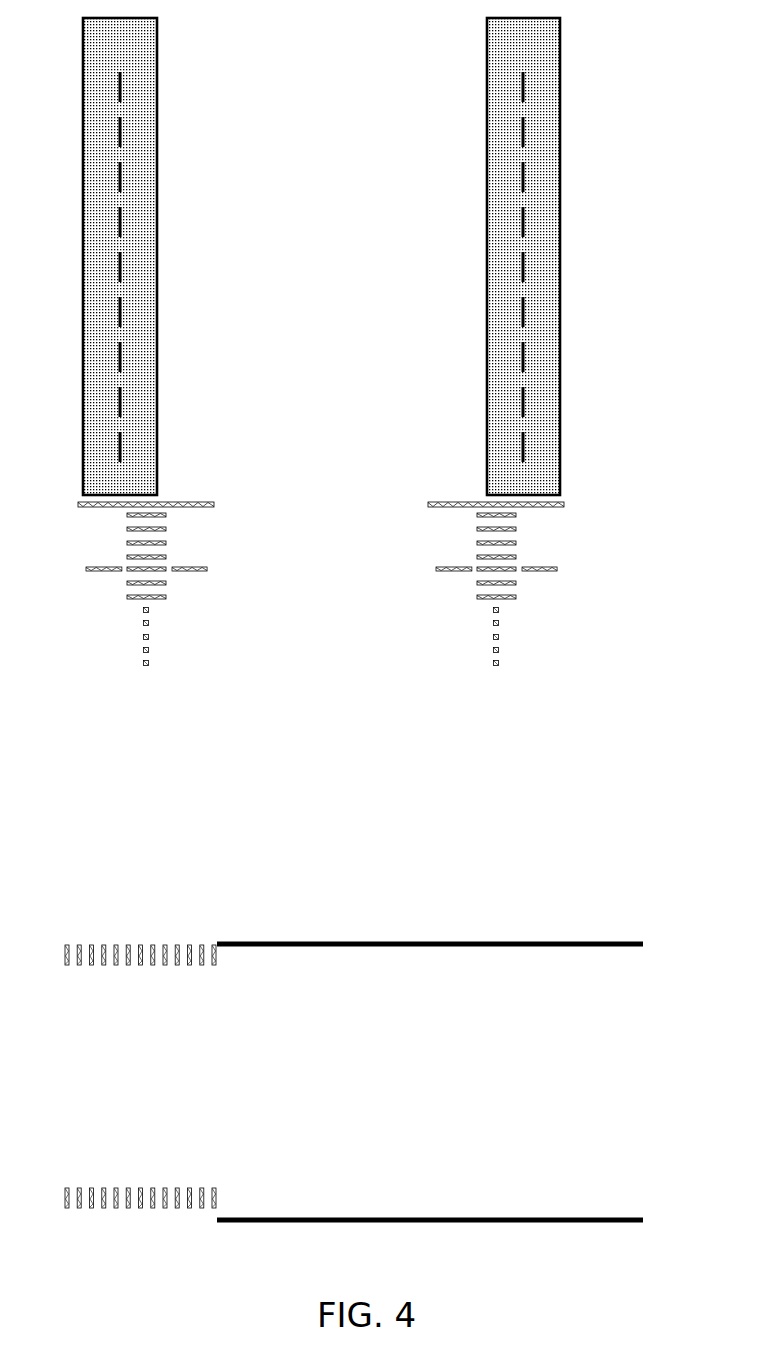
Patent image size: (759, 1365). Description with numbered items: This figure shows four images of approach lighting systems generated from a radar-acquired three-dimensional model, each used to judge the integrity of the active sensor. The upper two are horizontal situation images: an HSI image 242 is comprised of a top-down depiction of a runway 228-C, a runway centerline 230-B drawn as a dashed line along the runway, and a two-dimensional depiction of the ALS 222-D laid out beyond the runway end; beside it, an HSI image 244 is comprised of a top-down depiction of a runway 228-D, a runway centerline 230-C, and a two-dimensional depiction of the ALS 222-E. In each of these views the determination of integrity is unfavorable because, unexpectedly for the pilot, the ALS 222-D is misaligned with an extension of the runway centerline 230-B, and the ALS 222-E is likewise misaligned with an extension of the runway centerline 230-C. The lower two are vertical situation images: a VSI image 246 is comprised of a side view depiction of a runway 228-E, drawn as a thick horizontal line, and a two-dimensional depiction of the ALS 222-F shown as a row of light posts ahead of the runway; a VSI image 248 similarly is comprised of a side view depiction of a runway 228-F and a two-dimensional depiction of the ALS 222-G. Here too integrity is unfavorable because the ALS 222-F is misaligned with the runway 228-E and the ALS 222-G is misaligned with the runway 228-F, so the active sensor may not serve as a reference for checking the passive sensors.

The runway 228-C is at (168, 158).
The runway centerline 230-B is at (136, 297).
The ALS 222-D is at (223, 672).
The HSI image 242 is at (184, 374).
The runway 228-D is at (571, 158).
The runway centerline 230-C is at (539, 297).
The ALS 222-E is at (573, 672).
The HSI image 244 is at (571, 373).
The ALS 222-F is at (139, 909).
The runway 228-E is at (597, 930).
The VSI image 246 is at (354, 927).
The ALS 222-G is at (139, 1153).
The runway 228-F is at (598, 1206).
The VSI image 248 is at (353, 1180).